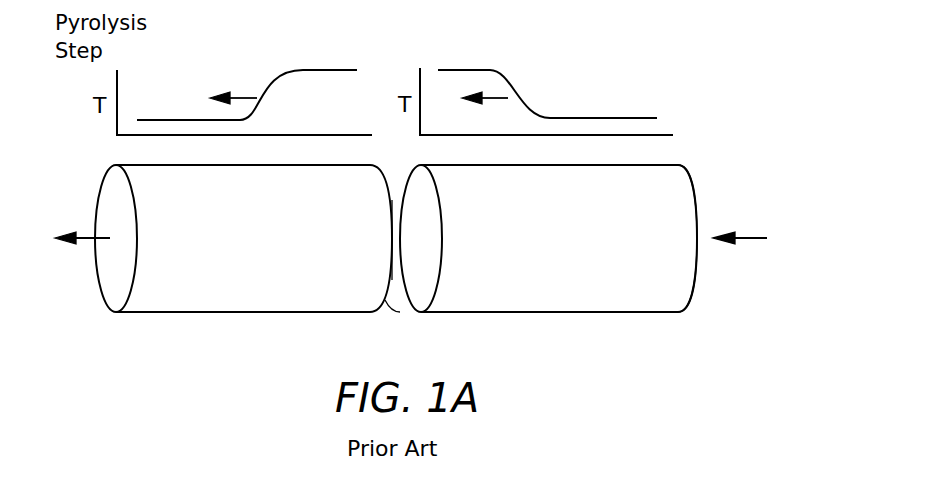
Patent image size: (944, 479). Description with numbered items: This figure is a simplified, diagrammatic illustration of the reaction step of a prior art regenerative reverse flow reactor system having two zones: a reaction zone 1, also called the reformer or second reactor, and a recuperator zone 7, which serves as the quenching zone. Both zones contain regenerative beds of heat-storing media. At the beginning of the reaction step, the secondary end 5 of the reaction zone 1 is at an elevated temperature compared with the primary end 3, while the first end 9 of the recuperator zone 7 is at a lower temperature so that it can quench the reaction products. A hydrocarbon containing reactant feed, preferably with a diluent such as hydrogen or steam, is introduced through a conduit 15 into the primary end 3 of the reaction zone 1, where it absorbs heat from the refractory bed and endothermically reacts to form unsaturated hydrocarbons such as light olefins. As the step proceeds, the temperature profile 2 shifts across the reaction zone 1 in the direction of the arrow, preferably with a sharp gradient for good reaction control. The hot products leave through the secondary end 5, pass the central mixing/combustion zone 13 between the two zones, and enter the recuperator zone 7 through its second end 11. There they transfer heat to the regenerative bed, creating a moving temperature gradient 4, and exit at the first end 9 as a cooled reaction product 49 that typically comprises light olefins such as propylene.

The reaction zone 1 is at (567, 251).
The temperature profile 2 is at (520, 92).
The primary end 3 is at (695, 280).
The temperature gradient 4 is at (325, 70).
The secondary end 5 is at (428, 251).
The recuperator zone 7 is at (259, 251).
The first end 9 is at (121, 271).
The second end 11 is at (383, 299).
The central mixing/combustion zone 13 is at (395, 180).
The conduit 15 is at (745, 235).
The reaction product 49 is at (88, 235).